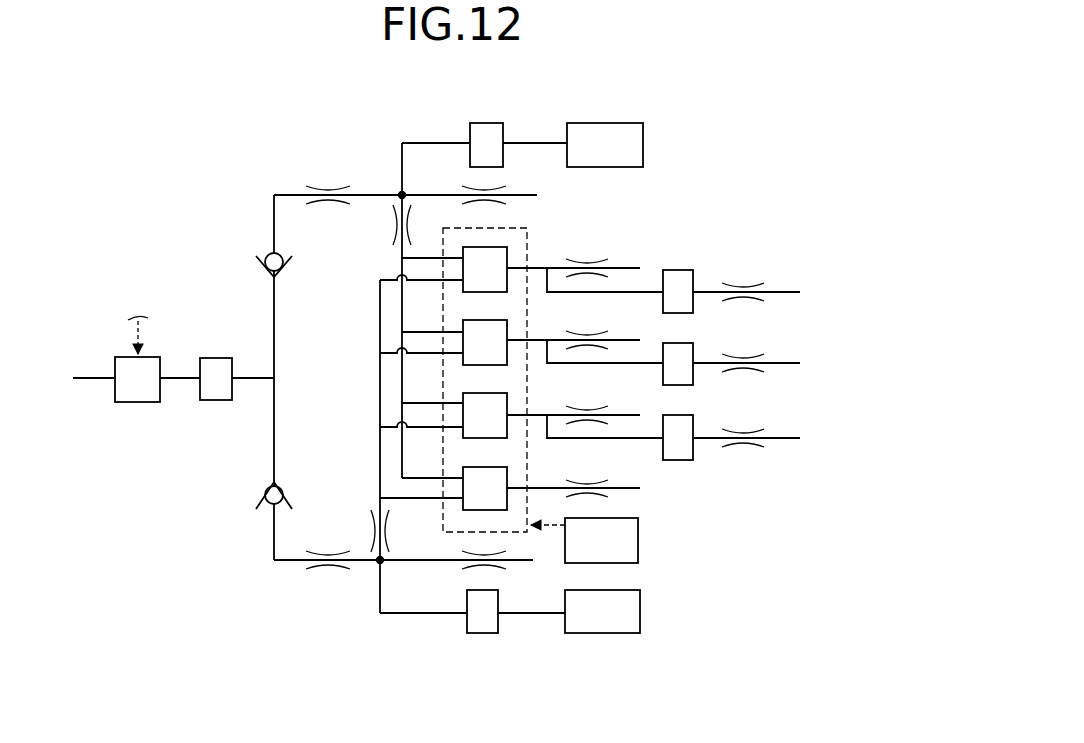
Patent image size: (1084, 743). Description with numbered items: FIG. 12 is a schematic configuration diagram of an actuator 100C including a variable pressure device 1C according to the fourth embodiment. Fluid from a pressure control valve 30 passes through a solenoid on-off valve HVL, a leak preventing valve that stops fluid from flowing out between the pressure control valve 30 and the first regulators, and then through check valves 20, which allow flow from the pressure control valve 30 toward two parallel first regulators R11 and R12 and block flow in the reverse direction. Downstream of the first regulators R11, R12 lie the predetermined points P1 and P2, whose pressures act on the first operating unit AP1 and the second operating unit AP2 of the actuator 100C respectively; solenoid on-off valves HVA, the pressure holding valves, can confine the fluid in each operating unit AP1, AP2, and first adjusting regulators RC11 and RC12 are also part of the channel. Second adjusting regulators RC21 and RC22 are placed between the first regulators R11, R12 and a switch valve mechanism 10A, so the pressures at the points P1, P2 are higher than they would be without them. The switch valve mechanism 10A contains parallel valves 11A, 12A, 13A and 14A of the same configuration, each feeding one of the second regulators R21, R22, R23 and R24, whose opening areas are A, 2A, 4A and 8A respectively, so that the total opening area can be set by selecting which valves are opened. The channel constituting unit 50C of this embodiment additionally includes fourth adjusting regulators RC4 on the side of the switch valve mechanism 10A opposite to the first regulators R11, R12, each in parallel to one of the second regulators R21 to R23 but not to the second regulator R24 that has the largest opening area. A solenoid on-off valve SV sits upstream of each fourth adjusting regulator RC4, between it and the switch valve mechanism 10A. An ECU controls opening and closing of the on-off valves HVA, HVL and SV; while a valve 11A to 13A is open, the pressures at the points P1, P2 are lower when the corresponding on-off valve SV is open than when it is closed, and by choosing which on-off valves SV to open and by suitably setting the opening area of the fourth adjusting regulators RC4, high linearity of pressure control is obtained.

The variable pressure device 1C is at (334, 130).
The actuator 100C is at (643, 110).
The check valve 20 is at (266, 254).
The pressure control valve 30 is at (118, 355).
The solenoid on-off valve (leak preventing valve) HVL is at (211, 357).
The predetermined point P1 is at (400, 191).
The predetermined point P2 is at (376, 567).
The first regulator R11 is at (318, 185).
The first regulator R12 is at (316, 572).
The second adjusting regulator RC21 is at (389, 232).
The second adjusting regulator RC22 is at (371, 528).
The first adjusting regulator RC11 is at (535, 170).
The first adjusting regulator RC12 is at (540, 590).
The solenoid on-off valve (pressure holding valve) HVA is at (486, 123).
The first operating unit AP1 is at (605, 145).
The second operating unit AP2 is at (602, 611).
The element ECU is at (584, 540).
The switch valve mechanism 10A is at (450, 227).
The channel constituting unit 50C is at (552, 256).
The valve 11A is at (513, 259).
The valve 12A is at (460, 320).
The valve 13A is at (460, 393).
The valve 14A is at (460, 467).
The opening area A is at (573, 253).
The opening area 2A is at (573, 324).
The opening area 4A is at (573, 399).
The opening area 8A is at (573, 473).
The second regulator R21 is at (606, 258).
The second regulator R22 is at (608, 330).
The second regulator R23 is at (608, 405).
The second regulator R24 is at (630, 463).
The solenoid on-off valve SV is at (676, 270).
The fourth adjusting regulator RC4 is at (762, 284).